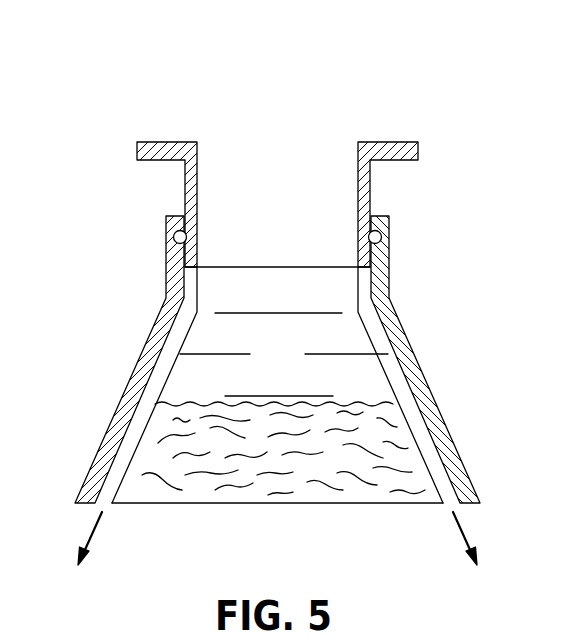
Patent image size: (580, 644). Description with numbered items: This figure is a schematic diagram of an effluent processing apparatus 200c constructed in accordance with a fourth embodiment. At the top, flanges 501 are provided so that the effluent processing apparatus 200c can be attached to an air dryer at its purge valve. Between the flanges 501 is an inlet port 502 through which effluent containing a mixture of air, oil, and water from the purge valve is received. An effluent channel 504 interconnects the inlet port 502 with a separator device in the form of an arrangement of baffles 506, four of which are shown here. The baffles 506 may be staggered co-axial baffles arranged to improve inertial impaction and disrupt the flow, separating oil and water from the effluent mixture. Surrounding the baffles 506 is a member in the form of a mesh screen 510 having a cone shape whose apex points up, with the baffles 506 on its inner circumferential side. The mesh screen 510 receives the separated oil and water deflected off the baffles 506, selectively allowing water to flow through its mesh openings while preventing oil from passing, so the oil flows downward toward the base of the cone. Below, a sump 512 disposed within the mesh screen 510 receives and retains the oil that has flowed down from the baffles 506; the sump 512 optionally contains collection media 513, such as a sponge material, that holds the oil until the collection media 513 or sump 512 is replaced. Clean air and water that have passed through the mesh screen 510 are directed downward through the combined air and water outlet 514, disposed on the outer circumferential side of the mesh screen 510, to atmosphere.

The effluent processing apparatus 200c is at (376, 105).
The flanges 501 is at (137, 153).
The inlet port 502 is at (314, 143).
The effluent channel 504 is at (298, 228).
The baffles 506 is at (203, 354).
The mesh screen 510 is at (167, 377).
The sump 512 is at (307, 503).
The collection media 513 is at (372, 444).
The combined air and water outlet 514 is at (115, 494).